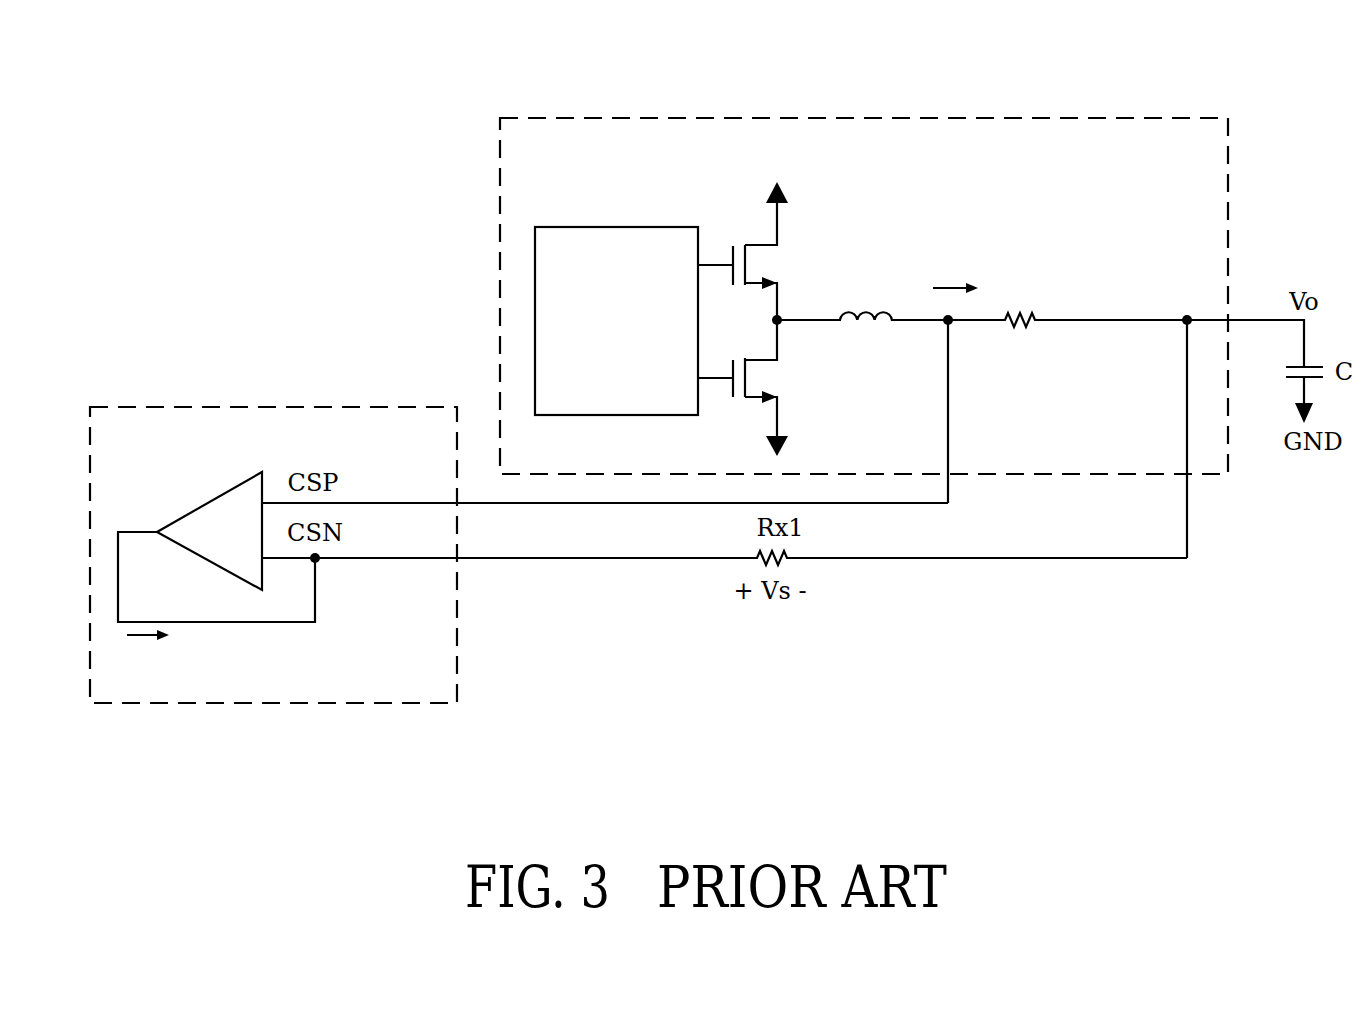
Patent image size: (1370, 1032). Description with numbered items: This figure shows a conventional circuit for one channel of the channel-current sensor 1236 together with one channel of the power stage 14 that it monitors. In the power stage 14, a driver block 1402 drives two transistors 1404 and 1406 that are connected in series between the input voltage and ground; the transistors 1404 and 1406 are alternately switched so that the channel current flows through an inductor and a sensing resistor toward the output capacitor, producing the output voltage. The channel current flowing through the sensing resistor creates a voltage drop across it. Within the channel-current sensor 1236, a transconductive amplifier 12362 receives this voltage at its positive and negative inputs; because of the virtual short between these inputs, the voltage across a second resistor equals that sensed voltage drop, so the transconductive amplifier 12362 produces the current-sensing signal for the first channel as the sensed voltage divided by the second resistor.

The power stage 14 is at (850, 118).
The driver 1402 is at (623, 227).
The transistor 1404 is at (791, 254).
The transistor 1406 is at (791, 387).
The channel-current sensor 1236 is at (255, 407).
The transconductive amplifier 12362 is at (198, 502).